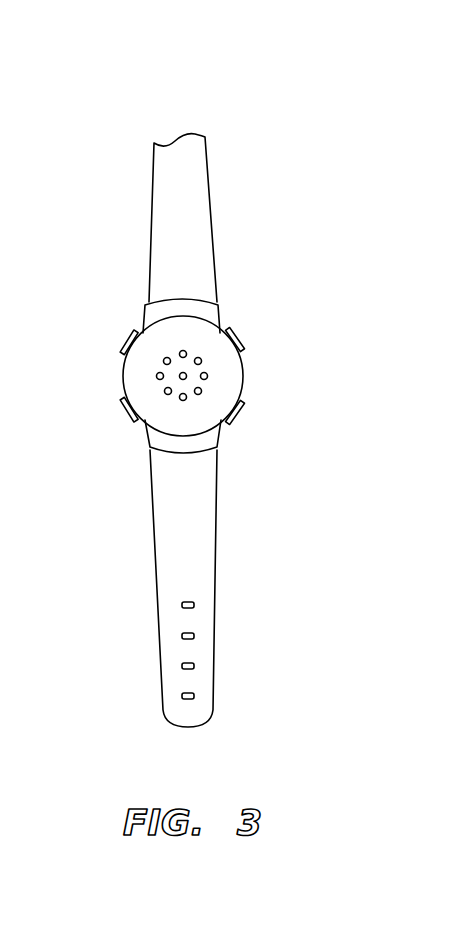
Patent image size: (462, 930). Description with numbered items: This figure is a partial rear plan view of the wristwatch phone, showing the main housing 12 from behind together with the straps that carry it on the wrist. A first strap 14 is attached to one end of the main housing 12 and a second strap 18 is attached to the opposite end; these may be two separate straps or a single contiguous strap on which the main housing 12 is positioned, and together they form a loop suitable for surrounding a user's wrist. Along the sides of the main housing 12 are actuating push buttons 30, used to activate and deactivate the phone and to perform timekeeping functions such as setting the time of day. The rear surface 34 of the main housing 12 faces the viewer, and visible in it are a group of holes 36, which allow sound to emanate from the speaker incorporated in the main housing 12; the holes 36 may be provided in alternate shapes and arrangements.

The main housing 12 is at (237, 363).
The first strap 14 is at (155, 240).
The second strap 18 is at (160, 527).
The buttons 30 is at (125, 345).
The rear surface 34 is at (228, 379).
The holes 36 is at (163, 362).